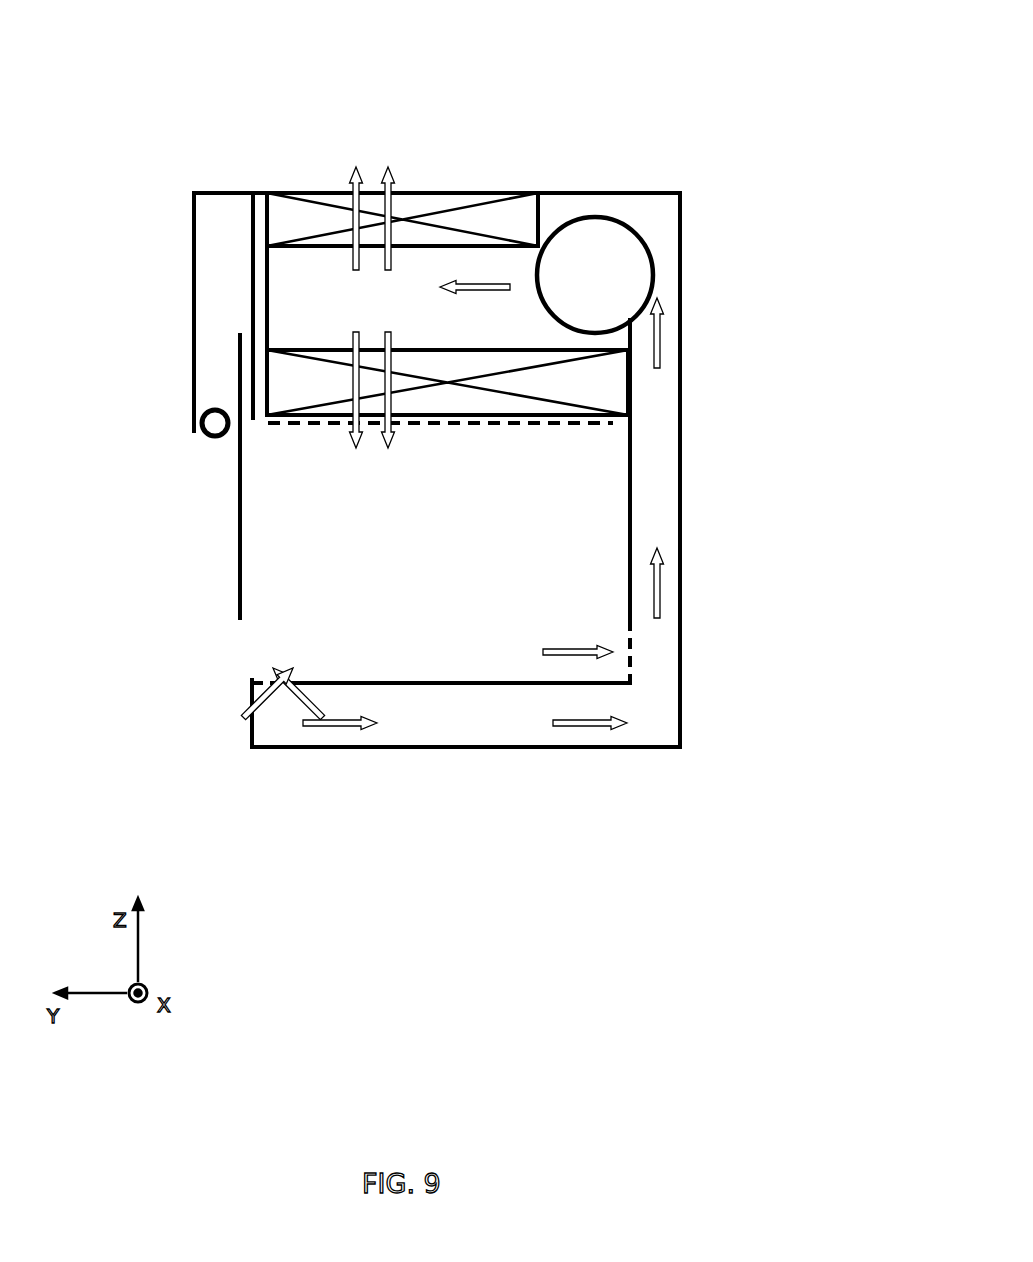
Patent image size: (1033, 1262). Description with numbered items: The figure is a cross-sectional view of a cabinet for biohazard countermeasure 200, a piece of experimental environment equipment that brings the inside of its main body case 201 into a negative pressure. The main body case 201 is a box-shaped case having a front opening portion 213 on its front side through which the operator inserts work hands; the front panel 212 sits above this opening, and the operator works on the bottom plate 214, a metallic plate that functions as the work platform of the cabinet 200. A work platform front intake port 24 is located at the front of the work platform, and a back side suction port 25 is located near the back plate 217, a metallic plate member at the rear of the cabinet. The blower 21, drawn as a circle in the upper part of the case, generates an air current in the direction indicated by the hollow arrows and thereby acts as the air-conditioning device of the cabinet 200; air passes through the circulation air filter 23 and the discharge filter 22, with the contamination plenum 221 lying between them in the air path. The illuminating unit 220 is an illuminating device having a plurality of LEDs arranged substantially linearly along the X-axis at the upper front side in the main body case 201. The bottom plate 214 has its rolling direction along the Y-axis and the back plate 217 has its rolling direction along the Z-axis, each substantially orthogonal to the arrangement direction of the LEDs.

The cabinet for biohazard countermeasure 200 is at (482, 386).
The main body case 201 is at (550, 176).
The blower 21 is at (620, 283).
The discharge filter 22 is at (345, 198).
The circulation air filter 23 is at (612, 393).
The work platform front intake port 24 is at (278, 699).
The back side suction port 25 is at (641, 655).
The front panel 212 is at (238, 538).
The front opening portion 213 is at (218, 638).
The bottom plate 214 is at (492, 683).
The back plate 217 is at (632, 515).
The illuminating unit 220 is at (203, 435).
The contamination plenum 221 is at (298, 297).